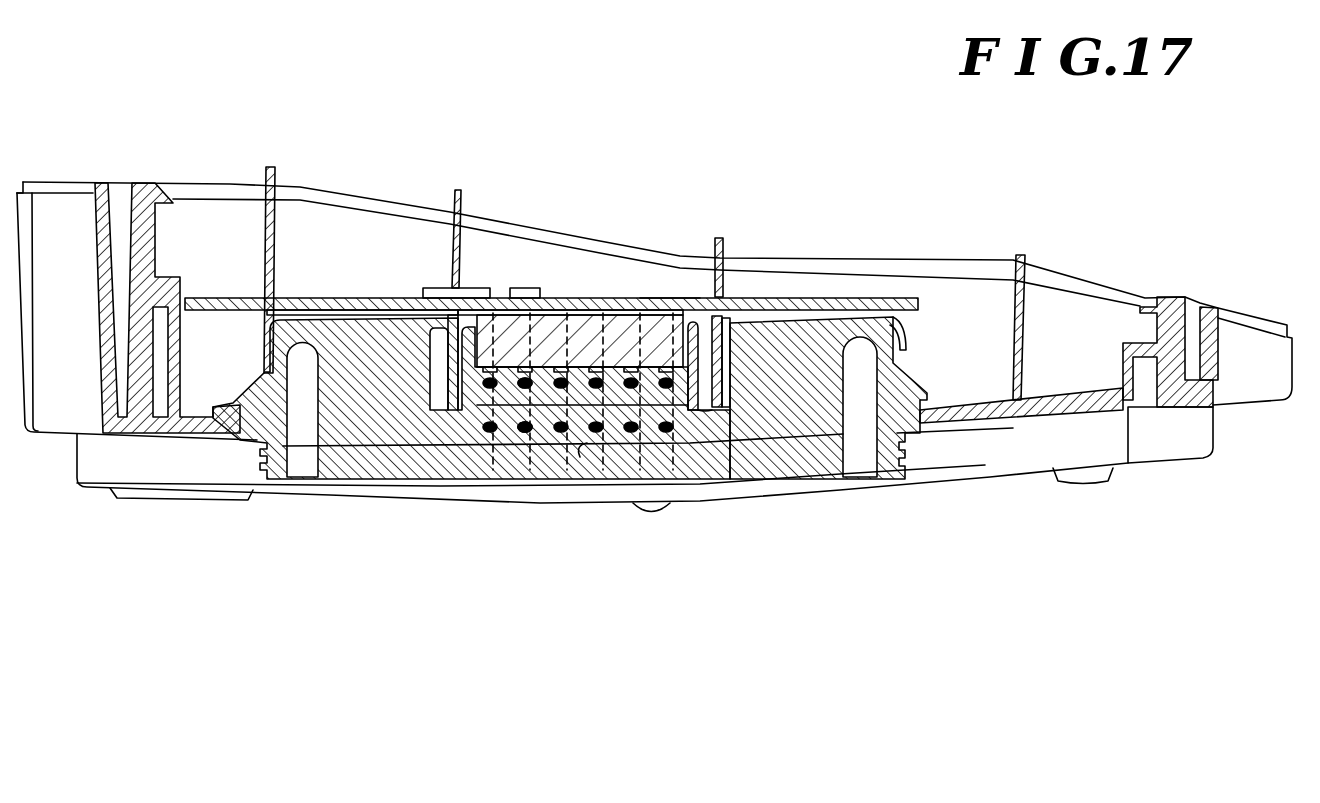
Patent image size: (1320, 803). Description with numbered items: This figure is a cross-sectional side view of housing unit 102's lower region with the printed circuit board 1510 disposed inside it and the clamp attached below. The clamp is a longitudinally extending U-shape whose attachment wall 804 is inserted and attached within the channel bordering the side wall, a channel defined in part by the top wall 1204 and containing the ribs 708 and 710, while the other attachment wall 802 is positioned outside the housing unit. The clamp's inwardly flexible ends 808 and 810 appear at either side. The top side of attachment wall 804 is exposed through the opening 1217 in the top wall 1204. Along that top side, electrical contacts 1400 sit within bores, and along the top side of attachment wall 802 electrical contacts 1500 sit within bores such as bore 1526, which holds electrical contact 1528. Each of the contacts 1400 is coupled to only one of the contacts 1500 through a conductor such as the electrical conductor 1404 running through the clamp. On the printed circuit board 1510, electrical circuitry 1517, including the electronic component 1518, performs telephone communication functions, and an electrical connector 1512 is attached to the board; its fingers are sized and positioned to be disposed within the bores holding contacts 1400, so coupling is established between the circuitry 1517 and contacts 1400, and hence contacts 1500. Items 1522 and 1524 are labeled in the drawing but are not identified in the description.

The rib 708 is at (452, 247).
The rib 710 is at (713, 267).
The attachment wall 802 is at (740, 408).
The attachment wall 804 is at (678, 382).
The end 808 is at (210, 472).
The end 810 is at (933, 447).
The top wall 1204 is at (382, 311).
The opening 1217 is at (677, 300).
The electrical contacts 1400 is at (475, 382).
The electrical conductor 1404 is at (528, 455).
The electrical contacts 1500 is at (475, 430).
The printed circuit board 1510 is at (218, 296).
The electrical connector 1512 is at (613, 320).
The electrical circuitry 1517 is at (474, 270).
The electronic component 1518 is at (437, 287).
The interface layer 1522 is at (548, 314).
The contact 1524 is at (520, 380).
The bore 1526 is at (522, 423).
The electrical contact 1528 is at (522, 425).